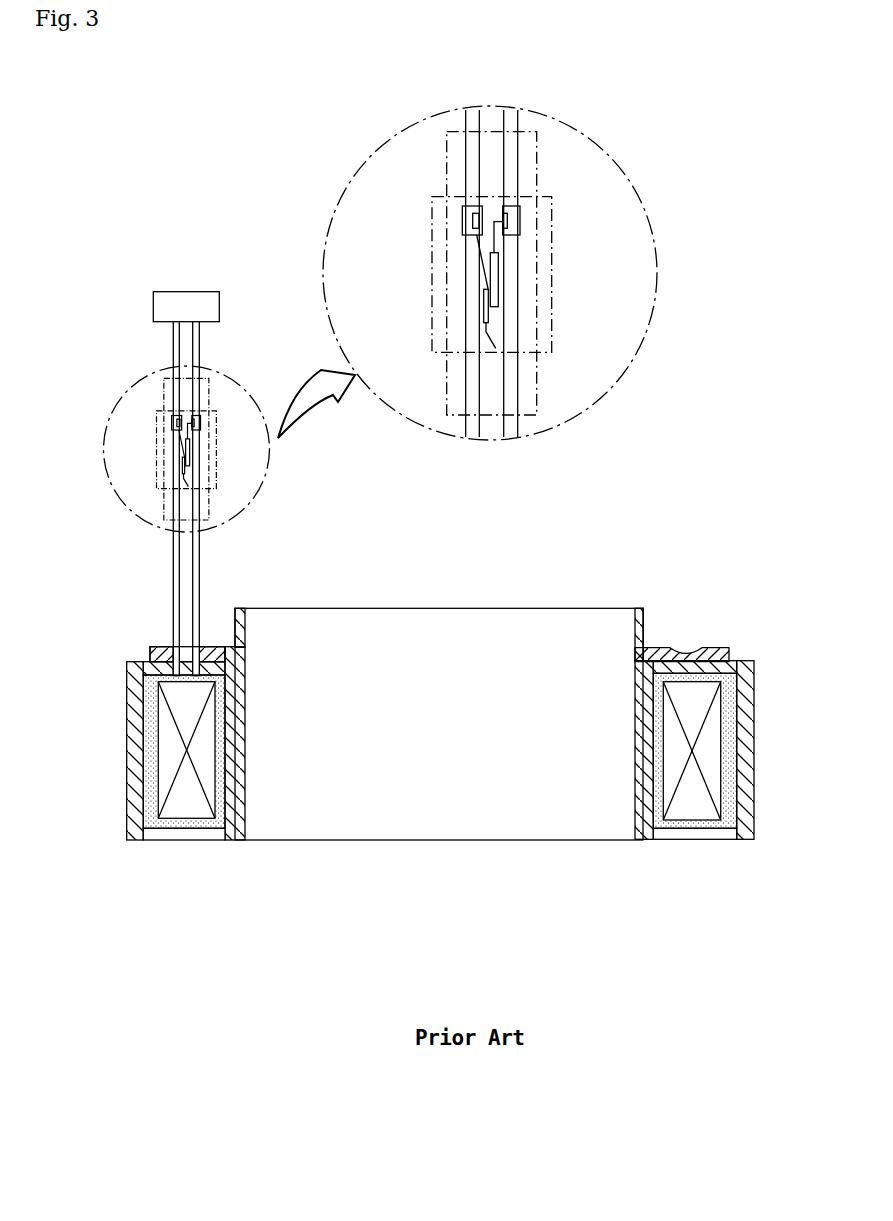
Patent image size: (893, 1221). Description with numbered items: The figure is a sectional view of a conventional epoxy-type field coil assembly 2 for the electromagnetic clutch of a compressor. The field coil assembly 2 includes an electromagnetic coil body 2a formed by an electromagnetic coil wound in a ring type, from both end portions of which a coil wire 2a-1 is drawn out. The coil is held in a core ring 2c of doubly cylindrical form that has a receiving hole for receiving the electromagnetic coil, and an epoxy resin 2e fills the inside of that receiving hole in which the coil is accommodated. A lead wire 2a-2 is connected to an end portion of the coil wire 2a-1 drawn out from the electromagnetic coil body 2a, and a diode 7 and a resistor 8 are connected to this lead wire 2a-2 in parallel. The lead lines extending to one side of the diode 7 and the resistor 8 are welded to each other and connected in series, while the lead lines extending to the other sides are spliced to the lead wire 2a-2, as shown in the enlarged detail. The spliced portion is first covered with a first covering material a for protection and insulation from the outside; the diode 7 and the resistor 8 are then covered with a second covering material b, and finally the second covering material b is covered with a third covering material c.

The field coil assembly 2 is at (552, 588).
The electromagnetic coil body 2a is at (710, 743).
The coil wire 2a-1 is at (152, 658).
The lead wire 2a-2 is at (177, 586).
The core ring 2c is at (747, 690).
The epoxy resin 2e is at (729, 787).
The diode 7 is at (488, 292).
The resistor 8 is at (503, 300).
The first covering material a is at (520, 223).
The second covering material b is at (537, 180).
The third covering material c is at (552, 293).